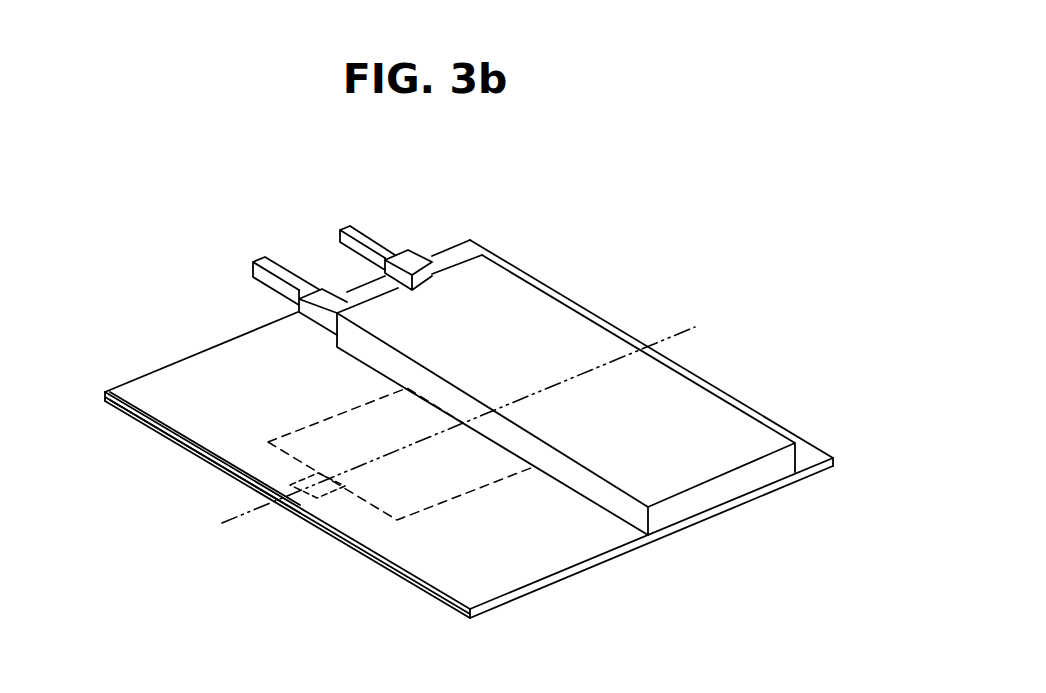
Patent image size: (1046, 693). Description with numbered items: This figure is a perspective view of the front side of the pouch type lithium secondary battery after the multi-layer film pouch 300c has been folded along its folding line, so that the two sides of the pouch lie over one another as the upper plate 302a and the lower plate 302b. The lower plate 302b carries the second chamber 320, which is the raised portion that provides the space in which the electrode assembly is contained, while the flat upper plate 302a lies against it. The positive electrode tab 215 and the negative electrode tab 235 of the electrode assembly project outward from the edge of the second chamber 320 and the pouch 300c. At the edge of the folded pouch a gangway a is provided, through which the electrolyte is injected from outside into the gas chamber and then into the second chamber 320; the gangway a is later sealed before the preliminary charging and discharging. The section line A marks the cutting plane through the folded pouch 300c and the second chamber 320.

The positive electrode tab 215 is at (264, 258).
The negative electrode tab 235 is at (351, 228).
The multi-layer film pouch 300c is at (197, 353).
The upper plate 302a is at (130, 416).
The lower plate 302b is at (130, 386).
The second chamber 320 is at (560, 306).
The gangway a is at (316, 503).
The section line A- A is at (458, 415).